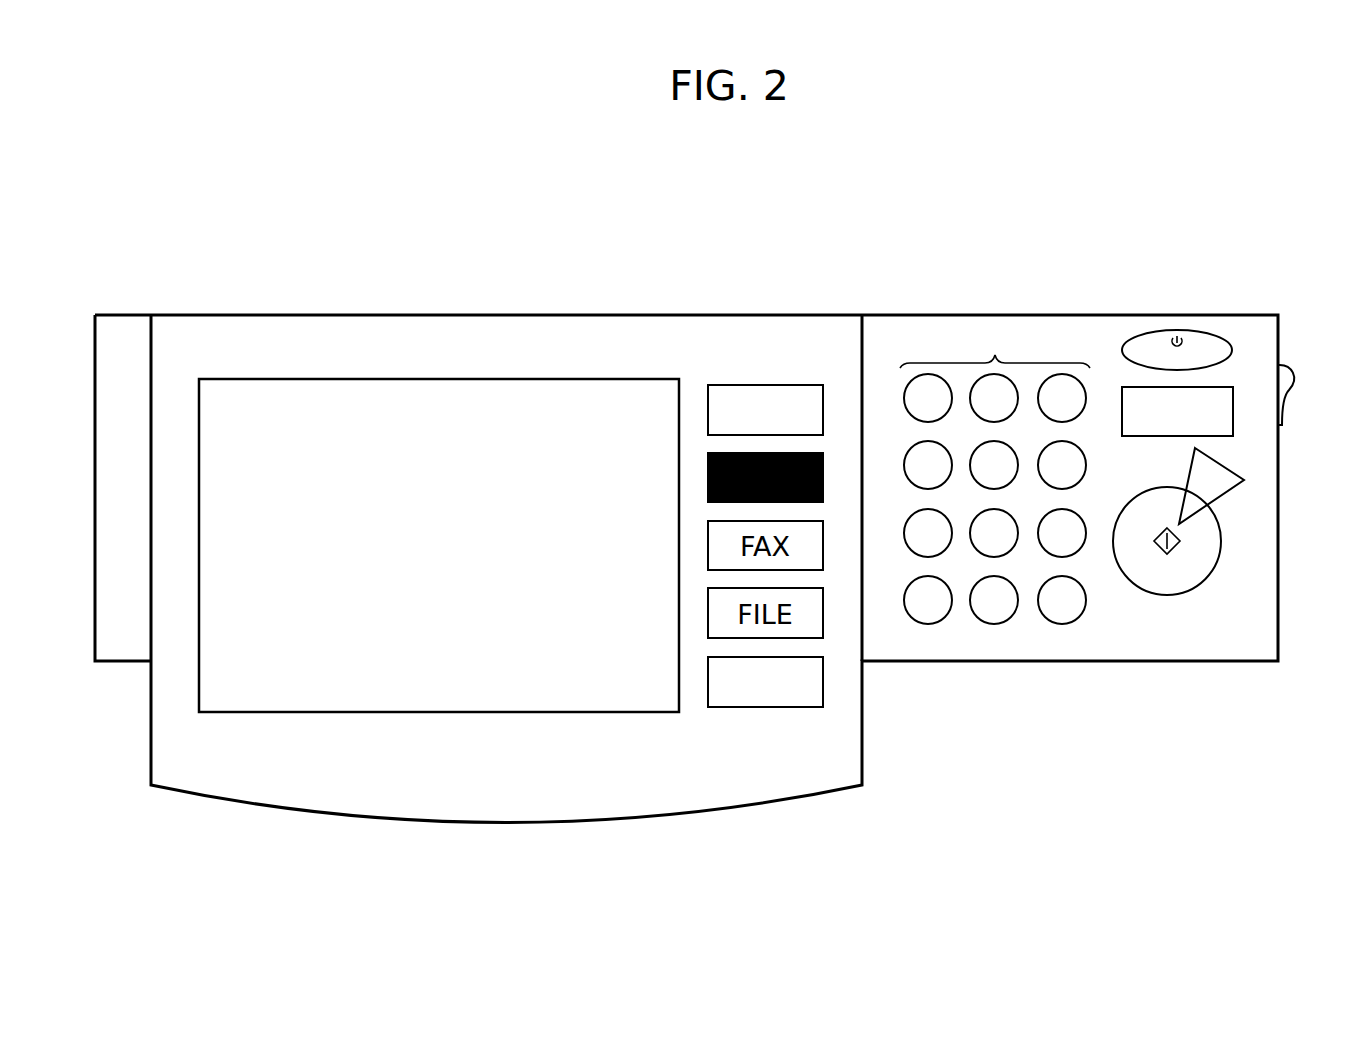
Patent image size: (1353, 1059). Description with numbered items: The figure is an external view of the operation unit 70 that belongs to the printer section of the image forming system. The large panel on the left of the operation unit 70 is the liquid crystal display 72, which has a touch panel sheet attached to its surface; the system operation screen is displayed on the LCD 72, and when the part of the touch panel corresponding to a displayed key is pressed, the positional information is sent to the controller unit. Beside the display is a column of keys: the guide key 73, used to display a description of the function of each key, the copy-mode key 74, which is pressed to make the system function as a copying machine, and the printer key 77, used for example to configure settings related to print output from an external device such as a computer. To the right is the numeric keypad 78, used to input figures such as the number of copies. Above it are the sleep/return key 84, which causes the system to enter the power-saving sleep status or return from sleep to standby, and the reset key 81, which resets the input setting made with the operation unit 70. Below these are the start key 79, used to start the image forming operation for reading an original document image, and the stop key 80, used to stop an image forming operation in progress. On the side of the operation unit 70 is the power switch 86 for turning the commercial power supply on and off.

The operation unit 70 is at (927, 230).
The liquid crystal display (LCD) 72 is at (505, 379).
The guide key 73 is at (752, 385).
The copy-mode key 74 is at (823, 463).
The printer key 77 is at (759, 707).
The numeric keypad 78 is at (994, 354).
The start key 79 is at (1133, 583).
The stop key 80 is at (1223, 497).
The reset key 81 is at (1233, 408).
The sleep/return key 84 is at (1155, 330).
The power switch 86 is at (1292, 385).